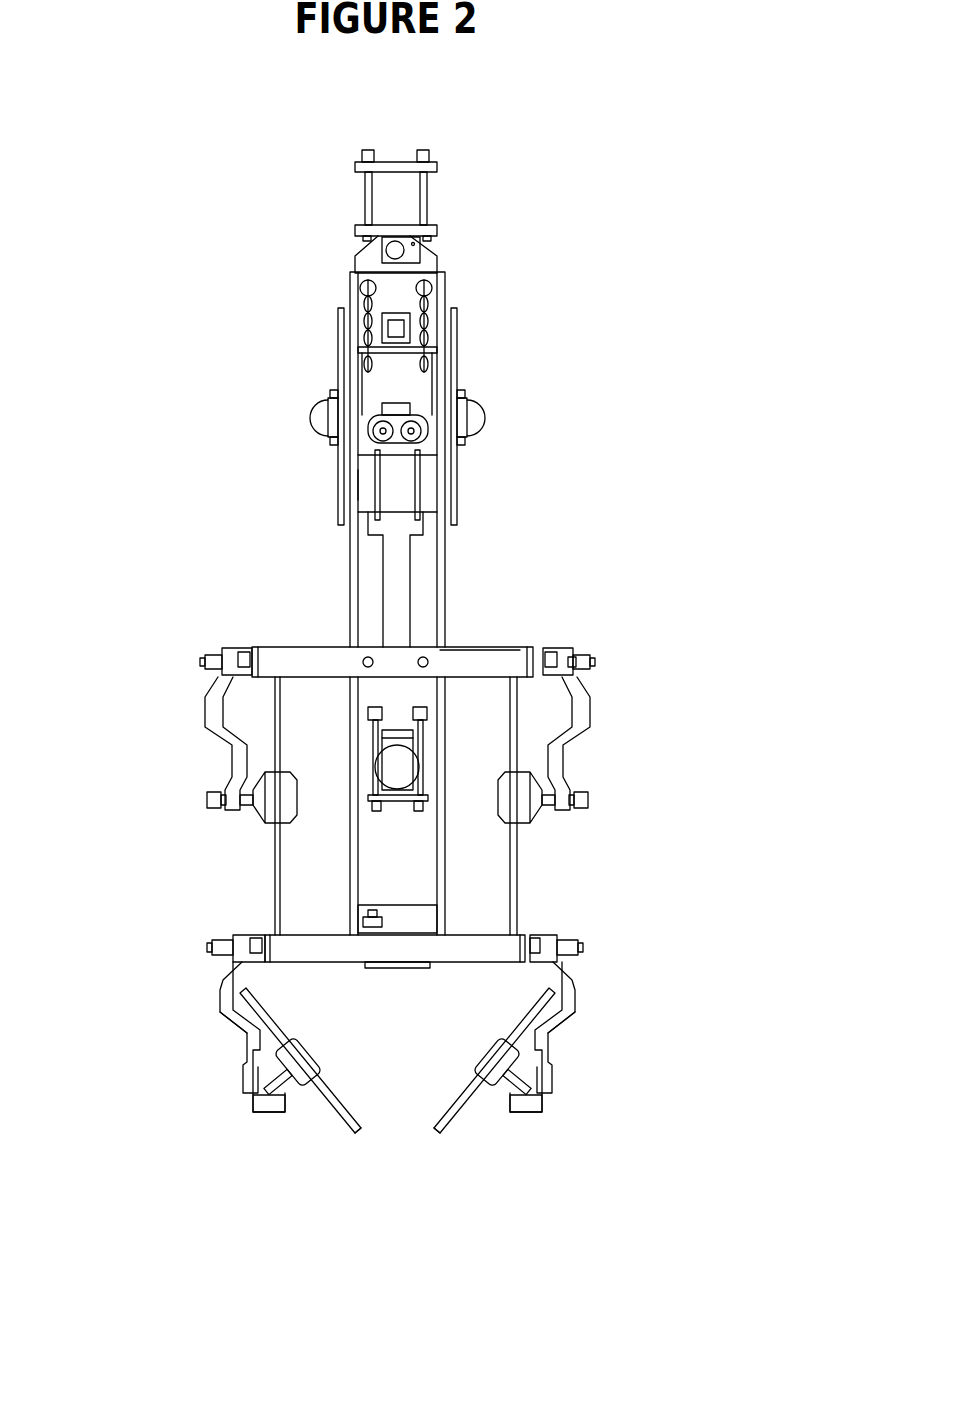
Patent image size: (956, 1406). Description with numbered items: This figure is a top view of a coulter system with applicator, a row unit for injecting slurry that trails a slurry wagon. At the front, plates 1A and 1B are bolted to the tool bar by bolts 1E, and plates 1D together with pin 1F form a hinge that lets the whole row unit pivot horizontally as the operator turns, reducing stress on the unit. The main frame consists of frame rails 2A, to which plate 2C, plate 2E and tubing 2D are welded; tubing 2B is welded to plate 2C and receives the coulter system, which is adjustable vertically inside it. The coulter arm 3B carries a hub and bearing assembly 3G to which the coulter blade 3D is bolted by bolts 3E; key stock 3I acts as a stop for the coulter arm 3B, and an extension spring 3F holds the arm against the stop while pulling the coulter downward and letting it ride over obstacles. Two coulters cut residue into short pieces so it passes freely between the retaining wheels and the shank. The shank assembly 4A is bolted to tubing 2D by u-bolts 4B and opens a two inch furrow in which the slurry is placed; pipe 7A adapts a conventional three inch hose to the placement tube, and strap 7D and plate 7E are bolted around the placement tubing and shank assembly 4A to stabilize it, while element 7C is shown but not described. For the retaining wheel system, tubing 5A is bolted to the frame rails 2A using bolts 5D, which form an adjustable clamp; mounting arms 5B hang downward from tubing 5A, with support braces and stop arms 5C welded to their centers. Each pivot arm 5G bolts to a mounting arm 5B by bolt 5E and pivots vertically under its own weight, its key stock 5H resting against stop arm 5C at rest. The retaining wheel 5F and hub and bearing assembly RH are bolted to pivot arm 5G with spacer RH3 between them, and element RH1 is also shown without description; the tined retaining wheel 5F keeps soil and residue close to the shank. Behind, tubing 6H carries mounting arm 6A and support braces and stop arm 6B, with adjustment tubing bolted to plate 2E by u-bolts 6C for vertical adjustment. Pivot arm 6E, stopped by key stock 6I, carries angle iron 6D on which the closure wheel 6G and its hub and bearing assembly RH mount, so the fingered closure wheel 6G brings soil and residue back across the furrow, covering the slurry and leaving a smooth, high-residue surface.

The plate 1A is at (397, 148).
The plate 1B is at (440, 232).
The plates 1D is at (440, 266).
The bolts 1E is at (358, 205).
The pin 1F is at (379, 253).
The frame rails 2A is at (348, 580).
The tubing 2B is at (372, 340).
The plate 2C is at (405, 350).
The tubing 2D is at (357, 487).
The plate 2E is at (402, 920).
The coulter arm 3B is at (410, 383).
The coulter blade 3D is at (458, 360).
The bolts 3E is at (318, 400).
The extension spring 3F is at (407, 280).
The hub and bearing assembly 3G is at (326, 425).
The key stock 3I is at (420, 312).
The shank assembly 4A is at (418, 548).
The u-bolts 4B is at (382, 495).
The tubing 5A is at (468, 648).
The mounting arms 5B is at (212, 650).
The support braces and stop arms 5C is at (570, 658).
The bolts 5D is at (413, 650).
The bolt 5E is at (592, 660).
The retaining wheel 5F is at (262, 878).
The pivot arm 5G is at (592, 705).
The key stock 5H is at (244, 650).
The mounting arm 6A is at (393, 1165).
The support braces and stop arm 6B is at (243, 945).
The u-bolts 6C is at (385, 975).
The angle iron 6D is at (263, 1100).
The pivot arm 6E is at (215, 1030).
The closure wheel 6G is at (357, 1137).
The tubing 6H is at (268, 985).
The key stock 6I is at (252, 940).
The pipe 7A is at (403, 770).
The right rod nut 7C is at (420, 818).
The strap 7D is at (373, 818).
The plate 7E is at (365, 716).
The hub and bearing assembly RH is at (300, 835).
The roller axle nut RH1 is at (205, 795).
The spacer RH3 is at (245, 820).